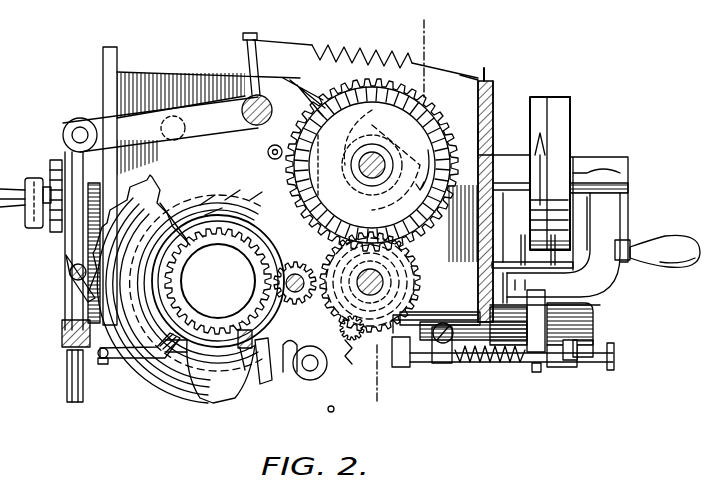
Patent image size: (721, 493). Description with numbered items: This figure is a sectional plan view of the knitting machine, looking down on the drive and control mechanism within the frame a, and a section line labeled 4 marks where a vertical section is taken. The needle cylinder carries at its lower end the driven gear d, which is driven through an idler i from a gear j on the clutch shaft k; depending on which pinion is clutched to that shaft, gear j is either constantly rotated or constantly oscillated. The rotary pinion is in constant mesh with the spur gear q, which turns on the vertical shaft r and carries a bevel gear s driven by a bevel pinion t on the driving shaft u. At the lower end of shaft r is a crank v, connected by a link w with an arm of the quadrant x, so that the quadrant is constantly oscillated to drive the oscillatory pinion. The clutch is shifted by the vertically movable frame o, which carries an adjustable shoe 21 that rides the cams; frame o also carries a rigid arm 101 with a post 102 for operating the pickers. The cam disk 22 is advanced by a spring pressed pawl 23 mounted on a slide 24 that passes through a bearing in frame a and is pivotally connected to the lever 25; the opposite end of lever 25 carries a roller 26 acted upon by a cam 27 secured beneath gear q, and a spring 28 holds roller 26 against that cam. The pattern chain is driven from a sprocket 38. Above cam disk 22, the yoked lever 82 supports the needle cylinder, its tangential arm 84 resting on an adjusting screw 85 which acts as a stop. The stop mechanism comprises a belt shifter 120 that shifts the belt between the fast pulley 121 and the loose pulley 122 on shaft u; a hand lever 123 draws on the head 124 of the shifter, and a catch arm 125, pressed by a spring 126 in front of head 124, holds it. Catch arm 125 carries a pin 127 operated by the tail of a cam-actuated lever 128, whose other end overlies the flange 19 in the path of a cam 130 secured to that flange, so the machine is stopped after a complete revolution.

The flange 19 is at (213, 216).
The lever 25 is at (140, 117).
The link w is at (207, 120).
The quadrant x is at (248, 118).
The post 102 is at (274, 145).
The spring 28 is at (355, 52).
The section line 4 is at (409, 217).
The roller 26 is at (420, 97).
The cam 27 is at (468, 80).
The bevel gear s is at (425, 135).
The spur gear q is at (488, 122).
The bevel pinion t is at (488, 145).
The fast pulley 121 is at (540, 97).
The loose pulley 122 is at (566, 97).
The driving shaft u is at (632, 178).
The driving sprocket 38 is at (52, 165).
The slide 24 is at (55, 233).
The spring pressed pawl 23 is at (68, 282).
The frame a is at (62, 335).
The adjusting screw 85 is at (107, 368).
The tangential arm 84 is at (147, 362).
The yoked lever 82 is at (205, 380).
The cam disk 22 is at (215, 398).
The cam 130 is at (240, 400).
The cam-actuated lever 128 is at (262, 372).
The shoe 21 is at (290, 372).
The frame o is at (331, 409).
The spring 126 is at (340, 370).
The head 124 is at (396, 360).
The hand lever 123 is at (408, 340).
The catch arm 125 is at (448, 362).
The belt shifter 120 is at (545, 368).
The pin 127 is at (405, 313).
The gear j is at (405, 290).
The clutch shaft k is at (382, 280).
The idler i is at (285, 285).
The driven gear d is at (185, 292).
The rigid arm 101 is at (232, 208).
The vertical shaft r is at (382, 180).
The crank v is at (372, 165).